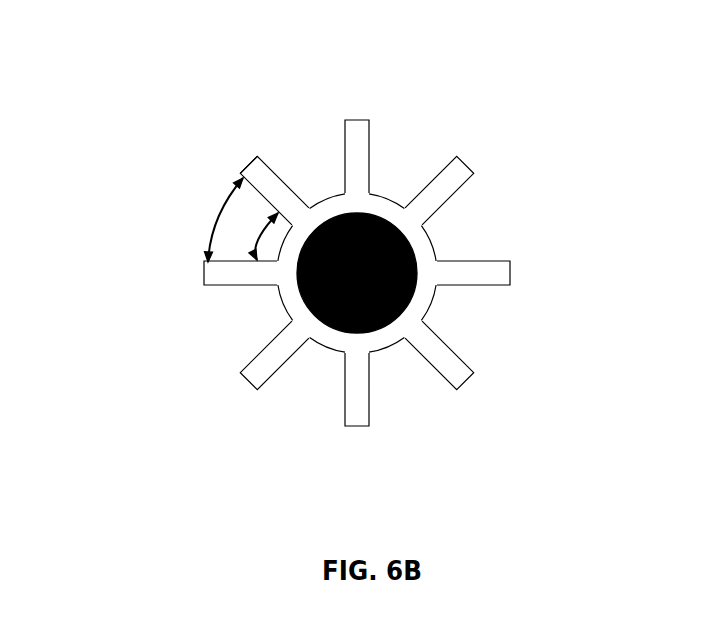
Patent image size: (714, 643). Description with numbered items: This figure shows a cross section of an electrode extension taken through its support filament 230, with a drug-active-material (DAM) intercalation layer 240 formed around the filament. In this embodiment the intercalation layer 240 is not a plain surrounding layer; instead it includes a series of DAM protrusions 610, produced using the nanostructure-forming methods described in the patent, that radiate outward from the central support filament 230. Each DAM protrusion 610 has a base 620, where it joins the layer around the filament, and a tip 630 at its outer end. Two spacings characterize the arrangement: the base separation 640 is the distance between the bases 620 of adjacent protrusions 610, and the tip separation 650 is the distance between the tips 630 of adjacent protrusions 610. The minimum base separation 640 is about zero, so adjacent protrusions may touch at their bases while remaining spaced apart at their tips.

The support filament 230 is at (372, 332).
The intercalation layer 240 is at (616, 319).
The DAM protrusion 610 is at (438, 185).
The DAM base 620 is at (367, 193).
The DAM tip 630 is at (252, 155).
The base separation 640 is at (258, 238).
The tip separation 650 is at (212, 206).